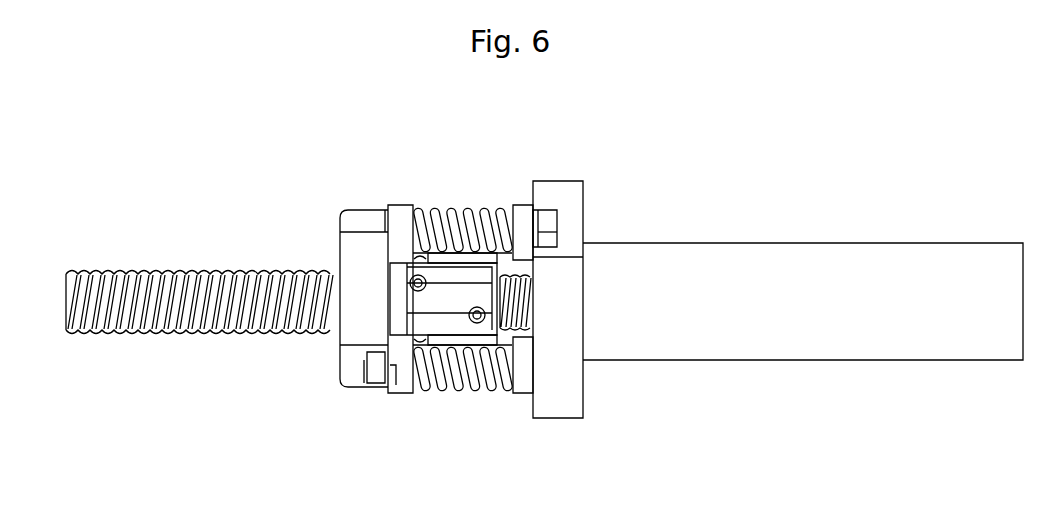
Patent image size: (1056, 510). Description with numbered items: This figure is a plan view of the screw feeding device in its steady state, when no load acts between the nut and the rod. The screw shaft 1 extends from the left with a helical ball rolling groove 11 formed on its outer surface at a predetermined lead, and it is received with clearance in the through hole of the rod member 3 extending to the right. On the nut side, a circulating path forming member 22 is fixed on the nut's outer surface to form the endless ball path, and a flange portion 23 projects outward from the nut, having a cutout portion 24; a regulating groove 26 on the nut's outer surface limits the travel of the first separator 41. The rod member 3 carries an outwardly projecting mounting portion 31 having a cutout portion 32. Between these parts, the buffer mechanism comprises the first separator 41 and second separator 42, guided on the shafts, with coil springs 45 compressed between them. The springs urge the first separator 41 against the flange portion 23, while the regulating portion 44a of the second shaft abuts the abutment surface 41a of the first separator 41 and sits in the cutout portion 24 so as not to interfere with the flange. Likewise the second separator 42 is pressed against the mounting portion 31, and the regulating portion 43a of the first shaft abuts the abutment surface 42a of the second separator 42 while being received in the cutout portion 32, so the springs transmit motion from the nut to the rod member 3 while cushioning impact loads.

The screw shaft 1 is at (145, 270).
The ball rolling groove 11 is at (203, 330).
The flange portion 23 is at (352, 250).
The cutout portion 24 is at (350, 366).
The regulating portion 44a is at (374, 372).
The first separator 41 is at (400, 212).
The abutment surface 41a is at (383, 376).
The coil spring 45 is at (456, 208).
The second separator 42 is at (521, 208).
The circulating path forming member 22 is at (418, 303).
The regulating groove 26 is at (418, 338).
The mounting portion 31 is at (576, 402).
The cutout portion 32 is at (574, 203).
The regulating portion 43a is at (552, 213).
The abutment surface 42a is at (556, 233).
The rod member 3 is at (824, 236).